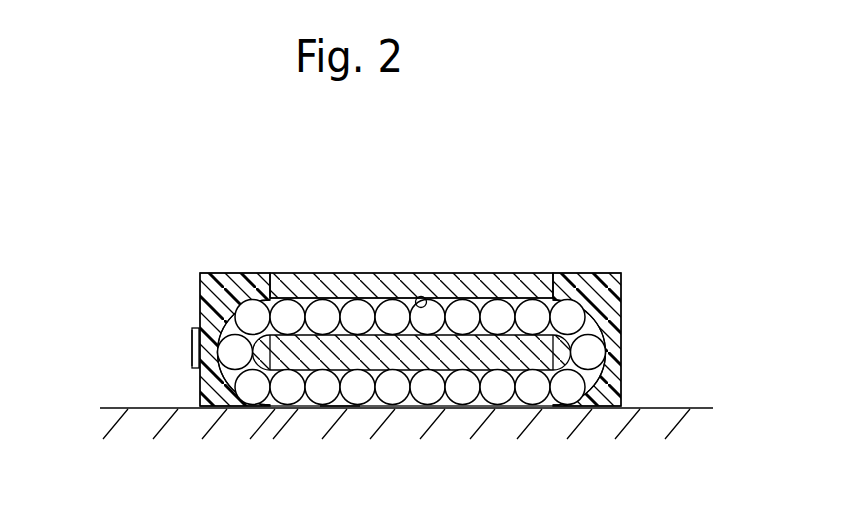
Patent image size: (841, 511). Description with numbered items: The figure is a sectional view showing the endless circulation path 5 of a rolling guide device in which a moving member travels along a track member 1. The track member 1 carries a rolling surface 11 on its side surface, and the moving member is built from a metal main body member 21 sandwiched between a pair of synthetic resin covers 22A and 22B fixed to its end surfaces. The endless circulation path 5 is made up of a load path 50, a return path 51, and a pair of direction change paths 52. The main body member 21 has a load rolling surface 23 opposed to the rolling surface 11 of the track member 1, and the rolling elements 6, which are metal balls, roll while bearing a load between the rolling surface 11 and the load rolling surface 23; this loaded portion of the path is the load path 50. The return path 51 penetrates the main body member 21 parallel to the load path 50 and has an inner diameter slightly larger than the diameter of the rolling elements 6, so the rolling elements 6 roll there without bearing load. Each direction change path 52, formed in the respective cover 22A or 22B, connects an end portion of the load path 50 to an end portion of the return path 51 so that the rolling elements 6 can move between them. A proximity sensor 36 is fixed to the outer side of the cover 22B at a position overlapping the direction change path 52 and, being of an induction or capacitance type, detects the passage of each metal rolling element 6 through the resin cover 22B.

The track member 1 is at (115, 406).
The endless circulation path 5 is at (478, 292).
The rolling elements 6 is at (497, 392).
The rolling surface 11 is at (152, 408).
The main body member 21 is at (373, 273).
The cover 22A is at (622, 357).
The cover 22B is at (215, 273).
The load rolling surface 23 is at (410, 358).
The proximity sensor 36 is at (192, 355).
The load path 50 is at (346, 412).
The return path 51 is at (422, 297).
The direction change path 52 is at (194, 327).